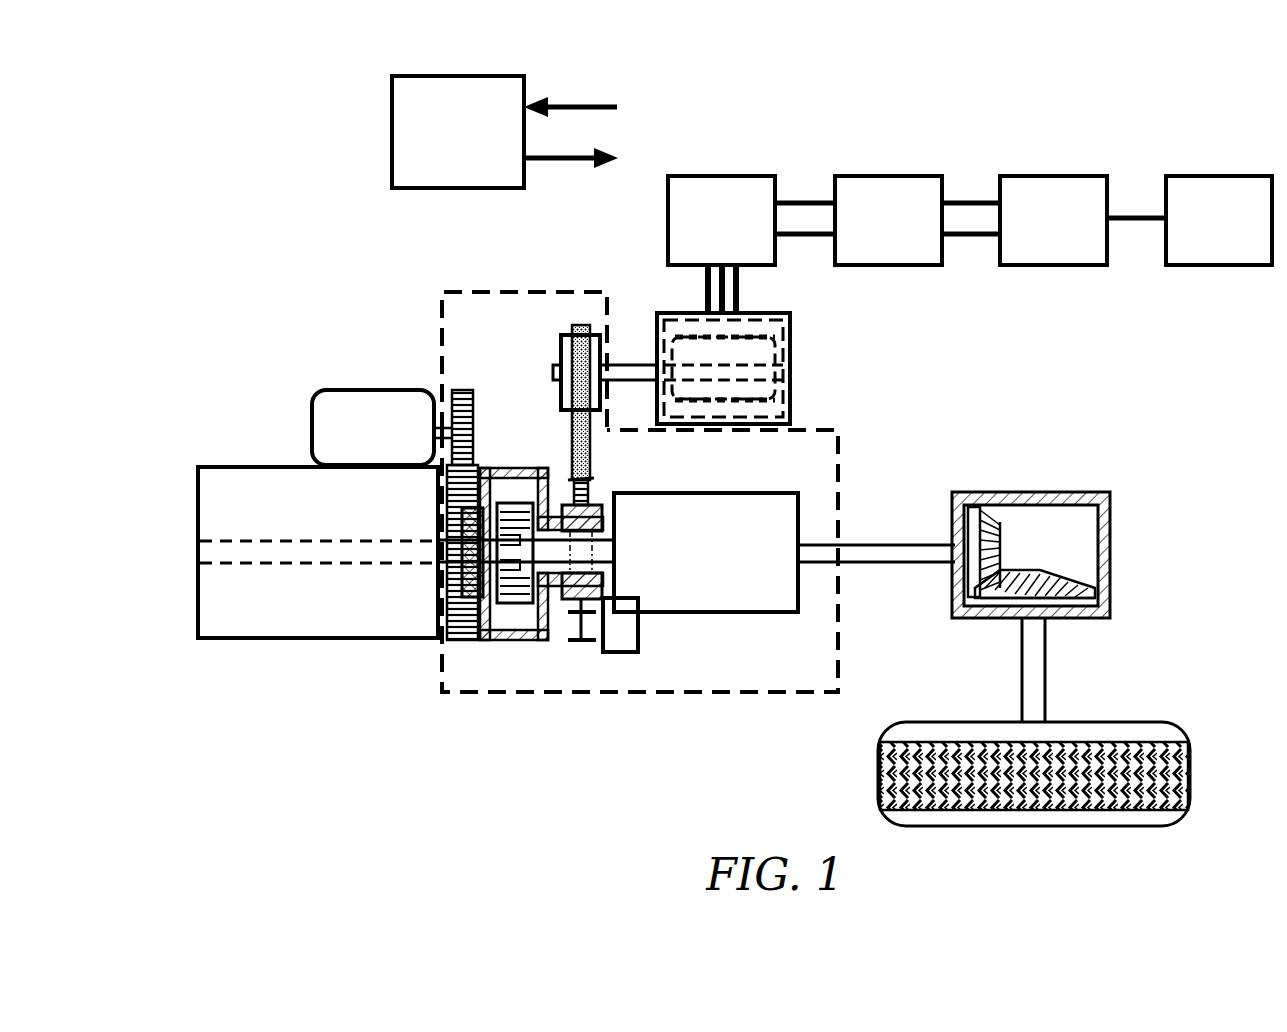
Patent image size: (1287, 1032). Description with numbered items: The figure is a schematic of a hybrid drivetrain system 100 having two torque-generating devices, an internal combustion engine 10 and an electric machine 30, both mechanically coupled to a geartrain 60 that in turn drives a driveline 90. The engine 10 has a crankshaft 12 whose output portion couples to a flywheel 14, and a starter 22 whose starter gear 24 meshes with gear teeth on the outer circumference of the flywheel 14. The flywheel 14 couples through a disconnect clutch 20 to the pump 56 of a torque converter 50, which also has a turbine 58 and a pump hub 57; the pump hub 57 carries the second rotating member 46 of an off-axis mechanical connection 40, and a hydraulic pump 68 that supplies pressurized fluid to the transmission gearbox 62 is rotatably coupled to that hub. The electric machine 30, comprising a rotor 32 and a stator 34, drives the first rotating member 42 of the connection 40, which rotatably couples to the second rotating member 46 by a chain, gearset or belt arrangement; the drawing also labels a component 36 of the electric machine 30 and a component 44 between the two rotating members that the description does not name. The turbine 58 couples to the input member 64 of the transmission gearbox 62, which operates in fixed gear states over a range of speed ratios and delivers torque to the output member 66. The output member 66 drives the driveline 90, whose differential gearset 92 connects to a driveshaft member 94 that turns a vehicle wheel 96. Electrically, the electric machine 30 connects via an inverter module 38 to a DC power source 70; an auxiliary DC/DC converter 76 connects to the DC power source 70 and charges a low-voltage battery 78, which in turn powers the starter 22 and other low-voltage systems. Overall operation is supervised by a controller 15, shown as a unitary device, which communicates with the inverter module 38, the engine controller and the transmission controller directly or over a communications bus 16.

The internal combustion engine 10 is at (212, 455).
The crankshaft 12 is at (215, 548).
The flywheel 14 is at (462, 640).
The controller 15 is at (441, 145).
The communications bus 16 is at (566, 130).
The disconnect clutch 20 is at (460, 600).
The starter 22 is at (358, 443).
The starter gear 24 is at (452, 392).
The electric machine 30 is at (791, 356).
The rotor 32 is at (760, 362).
The stator 34 is at (785, 418).
The windings 36 is at (790, 388).
The inverter module 38 is at (708, 234).
The off-axis mechanical connection 40 is at (535, 360).
The first rotating member 42 is at (605, 340).
The belt 44 is at (588, 432).
The second rotating member 46 is at (605, 512).
The torque converter 50 is at (581, 510).
The pump 56 is at (497, 640).
The pump hub 57 is at (605, 585).
The turbine 58 is at (527, 612).
The geartrain 60 is at (772, 698).
The transmission gearbox 62 is at (750, 541).
The input member 64 is at (620, 552).
The output member 66 is at (880, 566).
The hydraulic pump 68 is at (640, 633).
The DC power source 70 is at (874, 234).
The auxiliary DC/DC electric power converter 76 is at (1039, 234).
The low-voltage battery 78 is at (1205, 234).
The driveline 90 is at (1083, 530).
The differential gearset 92 is at (1033, 588).
The driveshaft member 94 is at (1045, 646).
The vehicle wheel 96 is at (1128, 723).
The hybrid drivetrain system 100 is at (915, 148).